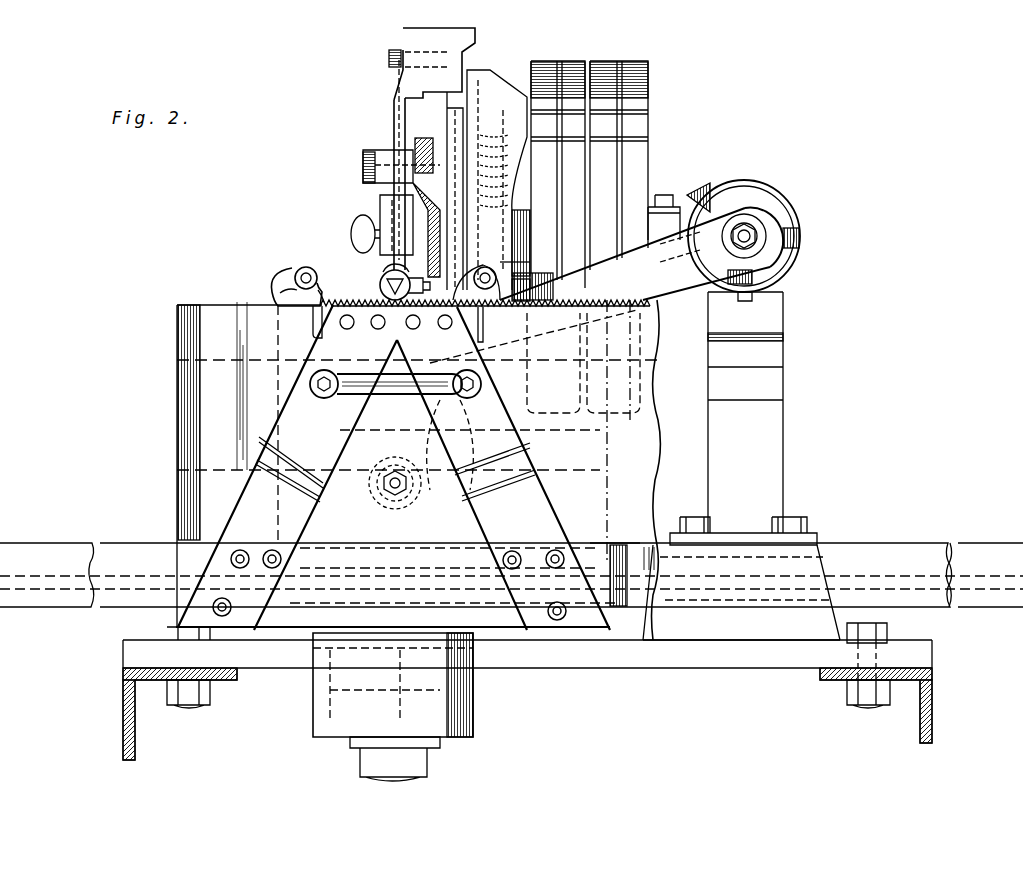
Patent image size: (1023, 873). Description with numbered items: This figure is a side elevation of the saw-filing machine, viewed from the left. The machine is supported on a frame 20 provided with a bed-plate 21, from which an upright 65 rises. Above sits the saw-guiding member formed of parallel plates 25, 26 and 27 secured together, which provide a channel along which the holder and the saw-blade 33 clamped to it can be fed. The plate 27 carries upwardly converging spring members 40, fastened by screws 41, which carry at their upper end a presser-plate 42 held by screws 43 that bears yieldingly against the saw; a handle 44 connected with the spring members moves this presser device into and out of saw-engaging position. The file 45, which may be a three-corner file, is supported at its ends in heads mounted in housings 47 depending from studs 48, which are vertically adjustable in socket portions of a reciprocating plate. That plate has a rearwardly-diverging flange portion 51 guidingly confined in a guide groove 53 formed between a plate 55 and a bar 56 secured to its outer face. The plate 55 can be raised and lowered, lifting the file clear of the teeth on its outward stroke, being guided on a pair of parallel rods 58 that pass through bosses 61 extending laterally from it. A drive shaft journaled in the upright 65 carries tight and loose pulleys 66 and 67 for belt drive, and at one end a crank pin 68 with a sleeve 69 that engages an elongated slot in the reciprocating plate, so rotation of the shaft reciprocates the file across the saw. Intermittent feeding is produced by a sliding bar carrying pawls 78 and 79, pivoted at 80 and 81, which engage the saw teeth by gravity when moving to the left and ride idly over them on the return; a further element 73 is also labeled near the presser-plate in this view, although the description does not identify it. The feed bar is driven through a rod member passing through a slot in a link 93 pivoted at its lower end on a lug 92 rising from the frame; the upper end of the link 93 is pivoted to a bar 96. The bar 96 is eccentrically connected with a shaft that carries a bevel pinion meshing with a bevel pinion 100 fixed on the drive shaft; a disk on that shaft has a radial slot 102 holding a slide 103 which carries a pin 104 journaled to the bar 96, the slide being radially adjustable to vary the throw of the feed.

The frame 20 is at (200, 728).
The bed-plate 21 is at (612, 669).
The plate 25 is at (177, 462).
The plate 26 is at (974, 562).
The plate 27 is at (597, 545).
The saw-blade 33 is at (645, 455).
The spring members 40 is at (255, 492).
The screws 41 is at (224, 598).
The presser-plate 42 is at (320, 323).
The screws 43 is at (378, 328).
The handle 44 is at (391, 397).
The file 45 is at (380, 290).
The housings 47 is at (474, 265).
The studs 48 is at (386, 270).
The flange portion 51 is at (391, 98).
The guide groove 53 is at (396, 90).
The plate 55 is at (460, 65).
The bar 56 is at (402, 52).
The rods 58 is at (491, 122).
The bosses 61 is at (523, 238).
The upright 65 is at (774, 440).
The tight pulley 66 is at (631, 75).
The loose pulley 67 is at (570, 64).
The crank pin 68 is at (363, 174).
The sleeve 69 is at (375, 190).
The hole 73 is at (445, 329).
The pawl 78 is at (481, 318).
The pawl 79 is at (282, 288).
The pivot 80 is at (515, 272).
The pivot 81 is at (320, 281).
The lug 92 is at (365, 521).
The link 93 is at (370, 492).
The bar 96 is at (641, 254).
The bevel pinion 100 is at (702, 202).
The radial slot 102 is at (787, 268).
The slide 103 is at (800, 240).
The pin 104 is at (752, 233).